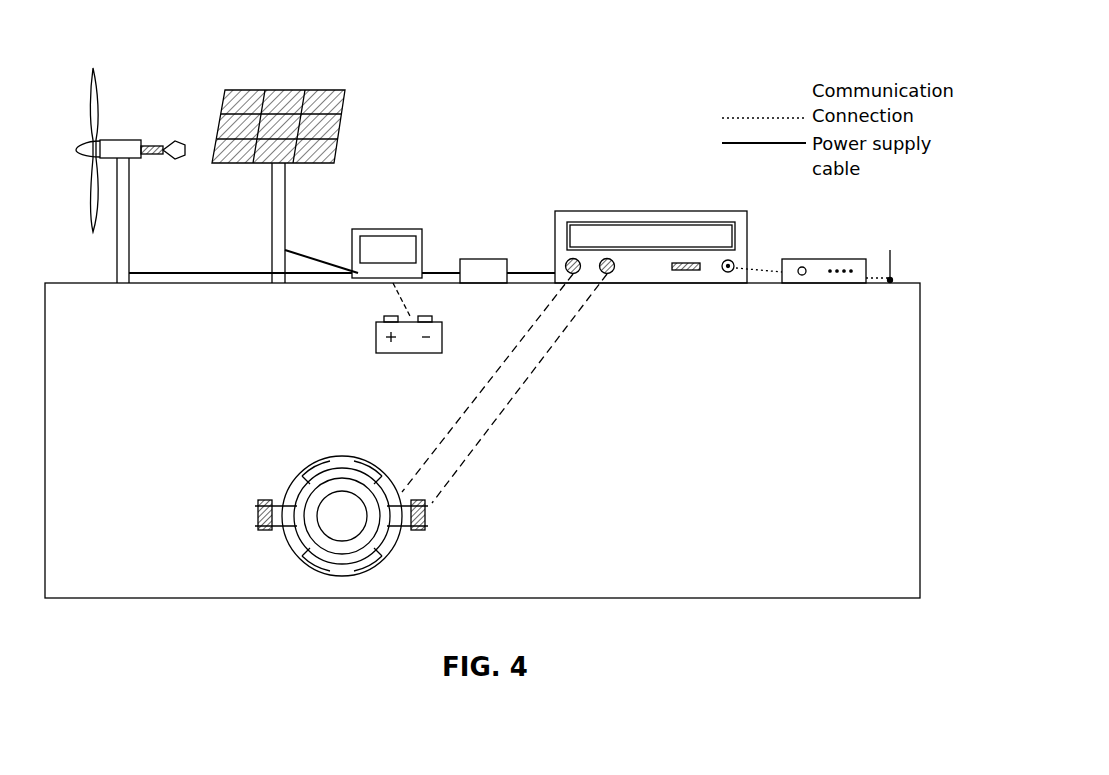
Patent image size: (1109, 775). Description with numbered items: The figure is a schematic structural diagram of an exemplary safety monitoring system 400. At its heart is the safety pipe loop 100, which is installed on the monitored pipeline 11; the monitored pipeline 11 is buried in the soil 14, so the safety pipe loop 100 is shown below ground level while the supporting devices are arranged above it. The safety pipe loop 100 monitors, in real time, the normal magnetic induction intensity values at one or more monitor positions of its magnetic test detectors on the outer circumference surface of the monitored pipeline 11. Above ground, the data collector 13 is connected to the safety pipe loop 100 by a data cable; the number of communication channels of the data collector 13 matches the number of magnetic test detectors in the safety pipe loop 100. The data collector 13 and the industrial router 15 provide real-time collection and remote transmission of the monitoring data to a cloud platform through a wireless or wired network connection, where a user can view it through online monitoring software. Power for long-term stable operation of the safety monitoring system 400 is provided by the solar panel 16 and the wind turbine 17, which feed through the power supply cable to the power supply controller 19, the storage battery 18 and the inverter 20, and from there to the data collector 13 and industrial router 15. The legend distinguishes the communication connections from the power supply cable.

The safety monitoring system 400 is at (92, 35).
The safety pipe loop 100 is at (340, 497).
The monitored pipeline 11 is at (340, 577).
The data collector 13 is at (656, 211).
The soil 14 is at (613, 580).
The industrial router 15 is at (832, 259).
The solar panel 16 is at (345, 122).
The wind turbine 17 is at (129, 212).
The storage battery 18 is at (437, 322).
The power supply controller 19 is at (392, 229).
The inverter 20 is at (478, 259).